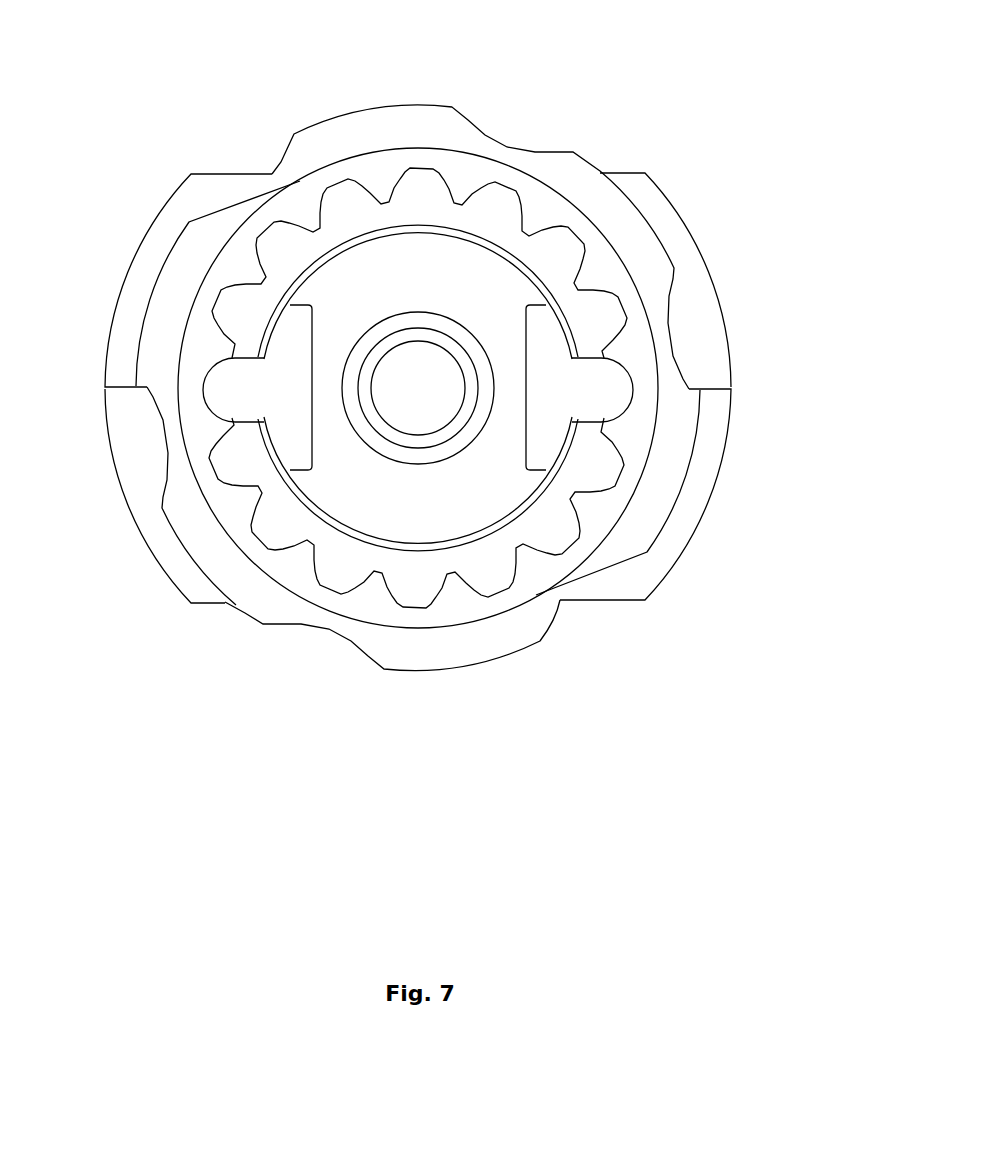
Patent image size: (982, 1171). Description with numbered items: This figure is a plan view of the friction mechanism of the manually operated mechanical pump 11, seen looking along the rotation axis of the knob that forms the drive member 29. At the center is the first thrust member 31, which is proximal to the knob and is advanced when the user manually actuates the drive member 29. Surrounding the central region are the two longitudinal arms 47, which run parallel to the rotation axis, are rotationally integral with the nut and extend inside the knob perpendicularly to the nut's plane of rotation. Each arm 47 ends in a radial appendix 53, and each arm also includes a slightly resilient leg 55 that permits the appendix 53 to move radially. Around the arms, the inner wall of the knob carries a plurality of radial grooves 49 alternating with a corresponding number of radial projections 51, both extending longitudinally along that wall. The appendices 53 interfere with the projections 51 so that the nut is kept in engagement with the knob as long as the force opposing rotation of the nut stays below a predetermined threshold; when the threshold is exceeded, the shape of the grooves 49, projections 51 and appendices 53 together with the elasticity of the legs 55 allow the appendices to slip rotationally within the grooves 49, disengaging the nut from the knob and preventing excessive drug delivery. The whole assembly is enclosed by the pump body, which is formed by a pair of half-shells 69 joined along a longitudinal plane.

The manually operated mechanical pump 11 is at (436, 410).
The drive member 29 is at (467, 119).
The first thrust member 31 is at (423, 390).
The longitudinal arms 47 is at (550, 335).
The radial grooves 49 is at (605, 459).
The radial projections 51 is at (528, 550).
The radial appendix 53 is at (227, 386).
The resilient leg 55 is at (287, 332).
The half-shells 69 is at (645, 197).